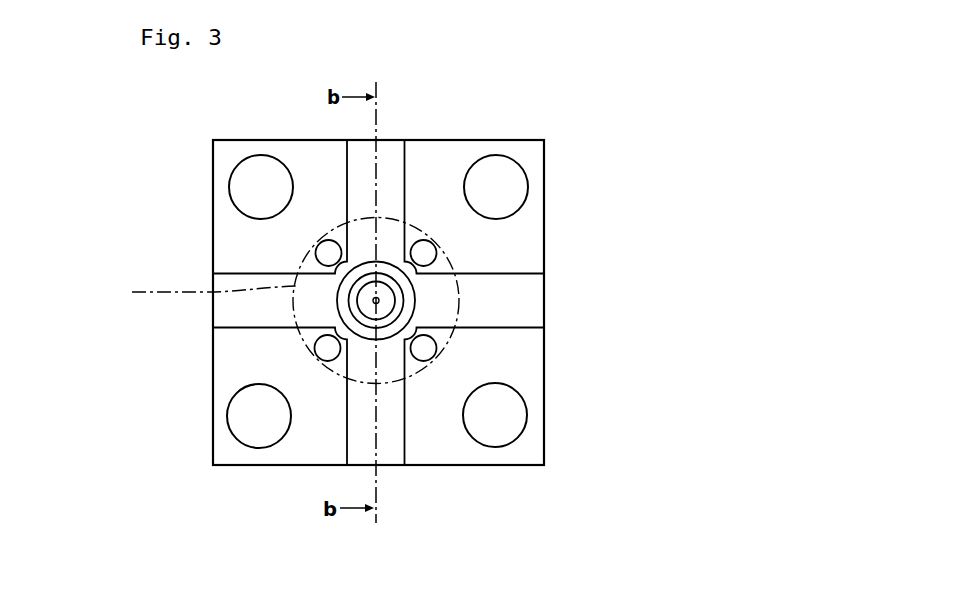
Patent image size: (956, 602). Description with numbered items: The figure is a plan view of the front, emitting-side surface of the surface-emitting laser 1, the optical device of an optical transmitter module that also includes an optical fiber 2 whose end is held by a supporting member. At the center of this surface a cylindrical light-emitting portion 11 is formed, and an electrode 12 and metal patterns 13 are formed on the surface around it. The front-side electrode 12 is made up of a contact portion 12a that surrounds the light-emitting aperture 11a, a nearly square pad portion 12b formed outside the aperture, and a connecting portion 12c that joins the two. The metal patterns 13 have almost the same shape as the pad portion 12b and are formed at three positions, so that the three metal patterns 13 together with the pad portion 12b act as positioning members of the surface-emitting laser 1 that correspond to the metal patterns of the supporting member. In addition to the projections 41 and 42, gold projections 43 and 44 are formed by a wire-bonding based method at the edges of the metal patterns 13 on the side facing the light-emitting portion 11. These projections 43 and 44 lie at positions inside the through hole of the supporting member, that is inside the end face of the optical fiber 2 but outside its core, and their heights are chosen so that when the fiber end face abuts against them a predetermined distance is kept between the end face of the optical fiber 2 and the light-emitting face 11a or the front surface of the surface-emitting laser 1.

The surface-emitting laser 1 is at (525, 115).
The optical fiber 2 is at (174, 318).
The light-emitting portion 11 is at (335, 302).
The light-emitting aperture 11a is at (380, 310).
The electrode 12 is at (604, 275).
The contact portion 12a is at (403, 290).
The pad portion 12b is at (510, 357).
The connecting portion 12c is at (415, 310).
The metal patterns 13 is at (305, 155).
The projection 41 is at (240, 178).
The projection 42 is at (240, 415).
The Au projection 43 is at (323, 253).
The Au projection 44 is at (317, 345).